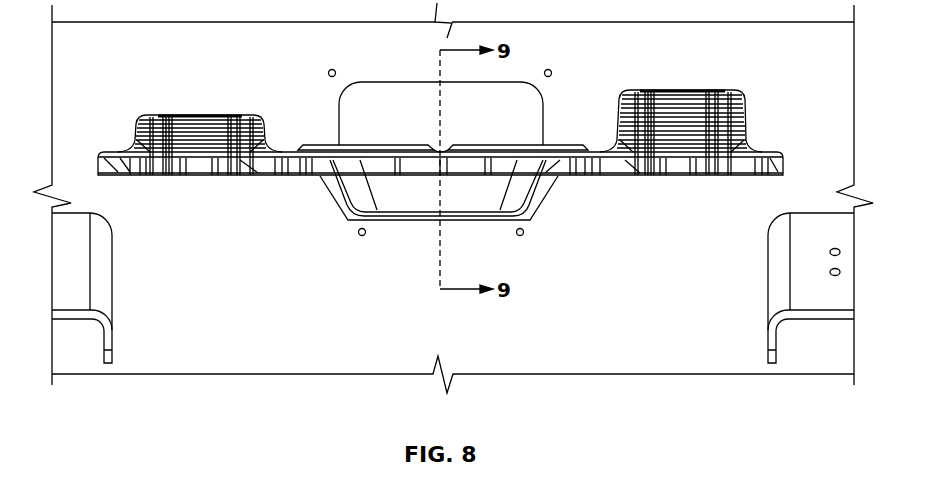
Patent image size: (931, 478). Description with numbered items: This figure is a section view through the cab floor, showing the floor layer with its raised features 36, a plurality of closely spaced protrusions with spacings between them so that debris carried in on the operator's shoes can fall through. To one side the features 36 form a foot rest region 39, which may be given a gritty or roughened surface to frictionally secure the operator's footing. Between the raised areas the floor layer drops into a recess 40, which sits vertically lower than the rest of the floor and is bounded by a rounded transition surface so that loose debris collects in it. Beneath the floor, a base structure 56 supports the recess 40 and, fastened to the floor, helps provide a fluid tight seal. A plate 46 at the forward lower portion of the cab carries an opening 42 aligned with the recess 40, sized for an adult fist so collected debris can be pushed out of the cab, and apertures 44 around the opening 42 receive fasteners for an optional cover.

The features 36 is at (484, 145).
The foot rest region 39 is at (748, 84).
The recess 40 is at (416, 201).
The opening 42 is at (387, 122).
The apertures 44 is at (332, 69).
The plate 46 is at (176, 66).
The base structure 56 is at (333, 198).